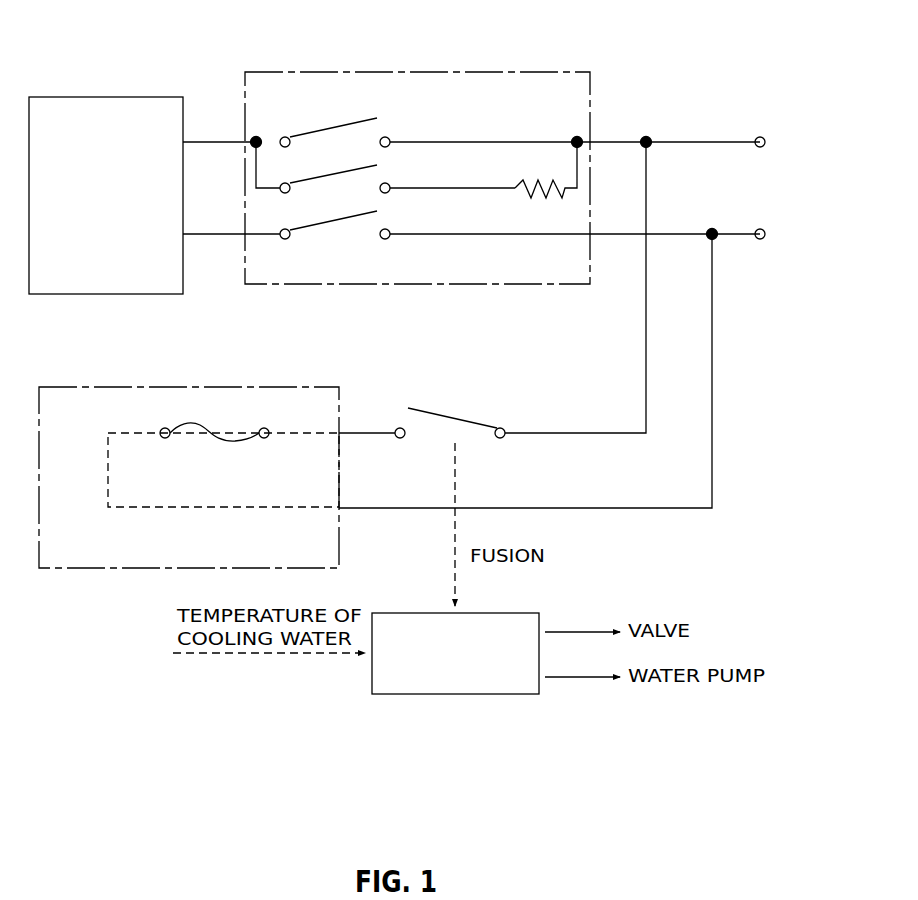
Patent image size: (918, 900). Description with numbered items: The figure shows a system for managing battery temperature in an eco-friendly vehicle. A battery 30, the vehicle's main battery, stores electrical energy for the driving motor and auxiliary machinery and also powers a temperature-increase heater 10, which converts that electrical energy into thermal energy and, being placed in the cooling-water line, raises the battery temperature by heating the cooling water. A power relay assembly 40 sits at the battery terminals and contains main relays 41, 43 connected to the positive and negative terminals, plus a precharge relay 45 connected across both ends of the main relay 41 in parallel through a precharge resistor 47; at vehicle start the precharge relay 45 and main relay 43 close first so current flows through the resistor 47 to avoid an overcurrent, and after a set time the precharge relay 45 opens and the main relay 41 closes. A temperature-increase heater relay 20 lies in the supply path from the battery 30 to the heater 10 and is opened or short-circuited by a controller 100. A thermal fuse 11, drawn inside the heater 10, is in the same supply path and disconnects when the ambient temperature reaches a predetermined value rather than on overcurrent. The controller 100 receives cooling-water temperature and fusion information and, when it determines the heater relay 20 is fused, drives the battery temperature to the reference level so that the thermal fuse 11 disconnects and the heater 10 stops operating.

The temperature-increase heater 10 is at (141, 570).
The thermal fuse 11 is at (209, 418).
The temperature-increase heater relay 20 is at (458, 408).
The battery 30 is at (97, 96).
The power relay assembly 40 is at (513, 71).
The main relay 41 is at (335, 112).
The main relay 43 is at (335, 250).
The precharge relay 45 is at (378, 174).
The precharge resistor 47 is at (540, 174).
The controller 100 is at (455, 695).